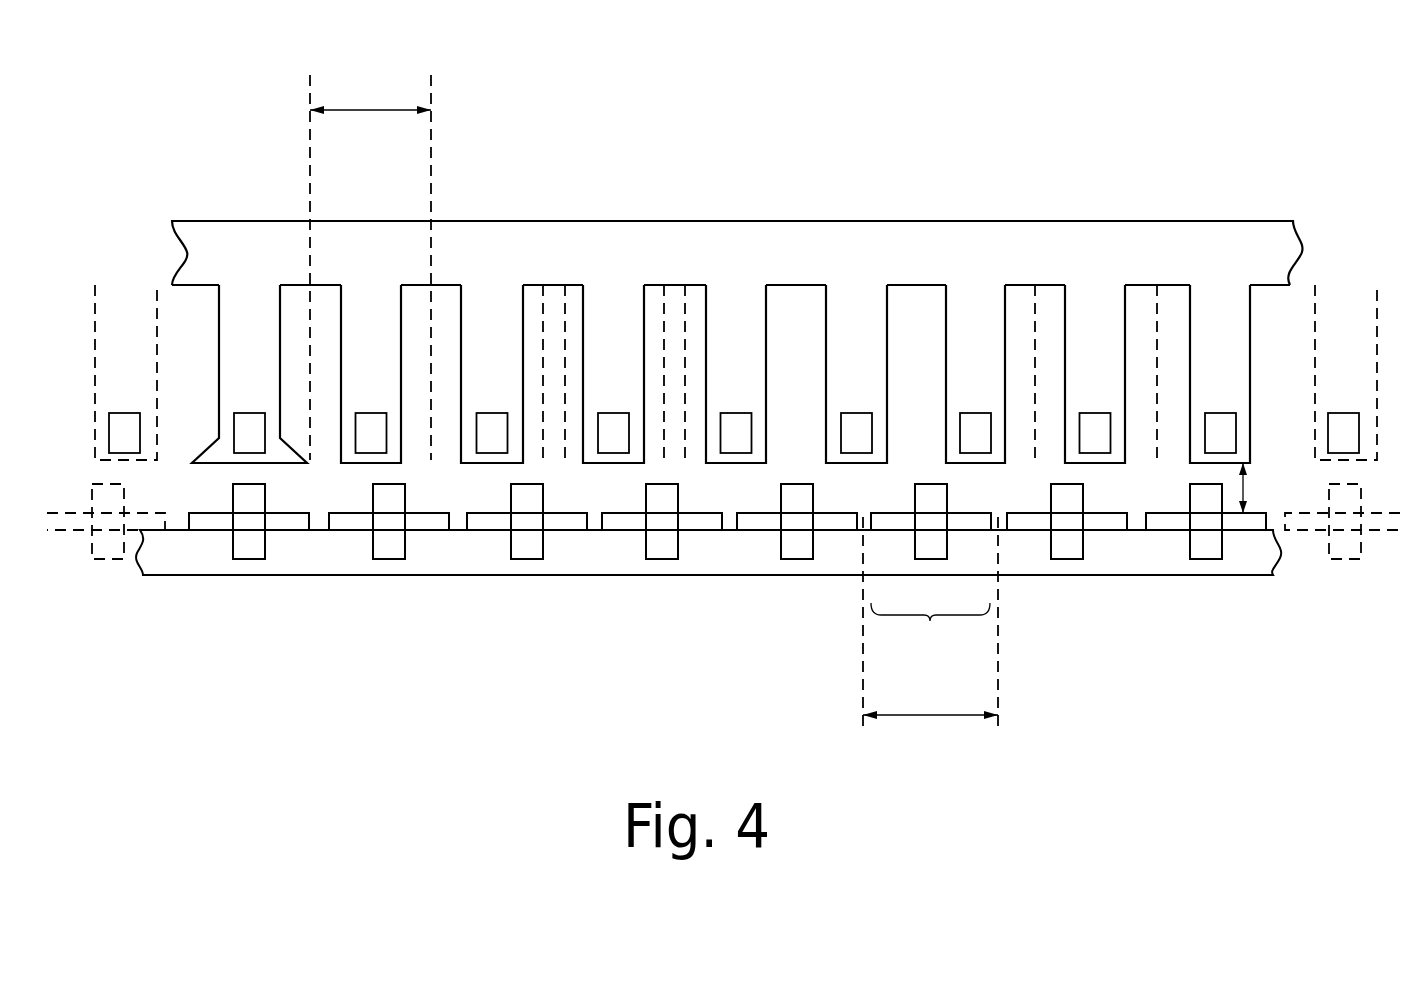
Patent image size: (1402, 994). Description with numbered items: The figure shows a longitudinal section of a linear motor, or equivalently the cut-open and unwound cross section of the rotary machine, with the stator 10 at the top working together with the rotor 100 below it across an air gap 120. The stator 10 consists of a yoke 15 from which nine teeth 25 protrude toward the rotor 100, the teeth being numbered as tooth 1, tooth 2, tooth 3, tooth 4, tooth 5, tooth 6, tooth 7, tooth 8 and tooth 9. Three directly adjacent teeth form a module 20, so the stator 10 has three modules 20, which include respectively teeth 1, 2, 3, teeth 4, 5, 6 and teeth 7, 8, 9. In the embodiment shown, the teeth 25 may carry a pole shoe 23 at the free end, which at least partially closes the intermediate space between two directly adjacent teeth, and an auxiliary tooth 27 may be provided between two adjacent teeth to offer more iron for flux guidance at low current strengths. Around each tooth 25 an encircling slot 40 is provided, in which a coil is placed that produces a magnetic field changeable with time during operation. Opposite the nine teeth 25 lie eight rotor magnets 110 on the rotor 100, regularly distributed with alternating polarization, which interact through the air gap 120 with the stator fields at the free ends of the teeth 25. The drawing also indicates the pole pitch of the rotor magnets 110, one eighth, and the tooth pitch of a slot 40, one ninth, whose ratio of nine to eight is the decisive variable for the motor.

The stator 10 is at (1141, 165).
The yoke 15 is at (1023, 248).
The module 20 is at (912, 187).
The pole shoe 23 is at (281, 463).
The tooth 25 is at (610, 315).
The auxiliary tooth 27 is at (555, 308).
The slot 40 is at (650, 352).
The rotor 100 is at (508, 599).
The rotor magnet 110 is at (623, 523).
The air gap 120 is at (1267, 488).
The tooth 1 is at (796, 433).
The tooth 2 is at (371, 433).
The tooth 3 is at (492, 433).
The tooth 4 is at (613, 433).
The tooth 5 is at (736, 433).
The tooth 6 is at (856, 433).
The tooth 7 is at (975, 433).
The tooth 8 is at (1095, 433).
The tooth 9 is at (672, 433).